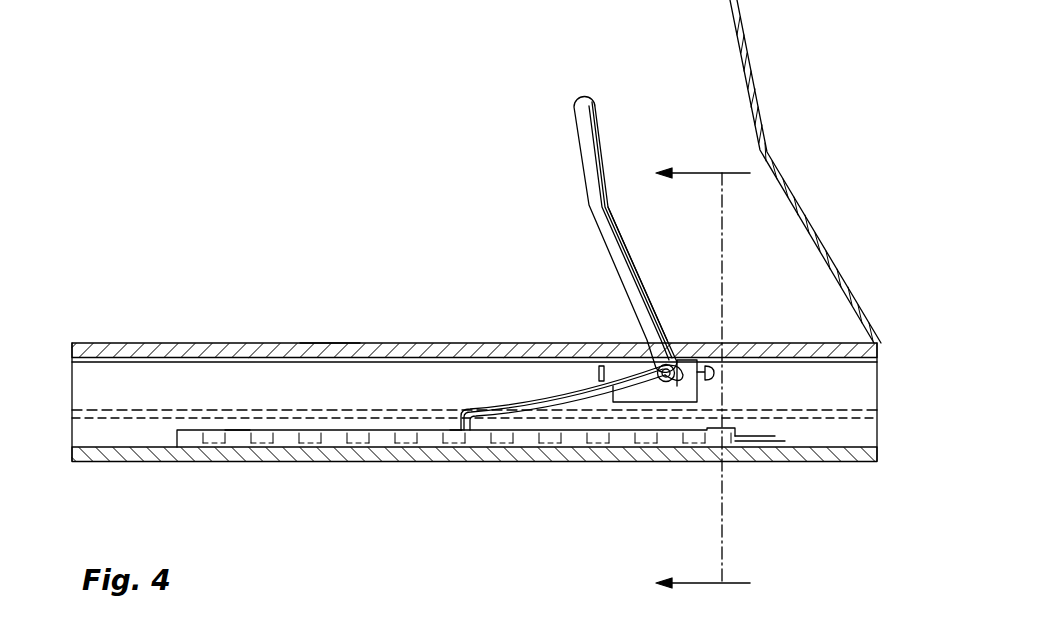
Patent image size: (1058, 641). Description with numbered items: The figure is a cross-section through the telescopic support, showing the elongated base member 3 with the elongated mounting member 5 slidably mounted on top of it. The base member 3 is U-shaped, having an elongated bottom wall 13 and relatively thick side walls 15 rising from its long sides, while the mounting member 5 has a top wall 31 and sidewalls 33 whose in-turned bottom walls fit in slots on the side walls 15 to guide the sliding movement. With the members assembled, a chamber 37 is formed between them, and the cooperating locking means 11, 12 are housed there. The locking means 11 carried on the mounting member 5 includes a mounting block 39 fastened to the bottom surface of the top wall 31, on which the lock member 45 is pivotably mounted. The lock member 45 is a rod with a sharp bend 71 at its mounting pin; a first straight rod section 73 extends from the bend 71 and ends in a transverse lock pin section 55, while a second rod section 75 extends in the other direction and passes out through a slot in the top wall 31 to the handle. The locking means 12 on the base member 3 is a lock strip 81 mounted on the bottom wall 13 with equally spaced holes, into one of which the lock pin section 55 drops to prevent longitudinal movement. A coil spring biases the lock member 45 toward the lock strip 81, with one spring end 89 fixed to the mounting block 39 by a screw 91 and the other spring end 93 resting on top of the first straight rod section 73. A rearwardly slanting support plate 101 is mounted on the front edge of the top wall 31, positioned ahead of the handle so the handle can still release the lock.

The base member 3 is at (381, 468).
The mounting member 5 is at (168, 334).
The locking means 11 is at (572, 175).
The locking means 12 is at (235, 424).
The bottom wall 13 is at (170, 463).
The side walls 15 is at (135, 392).
The top wall 31 is at (330, 344).
The sidewalls 33 is at (116, 360).
The chamber 37 is at (84, 429).
The mounting block 39 is at (680, 403).
The lock member 45 is at (660, 288).
The lock pin section 55 is at (440, 417).
The bend 71 is at (700, 403).
The first straight rod section 73 is at (501, 388).
The second rod section 75 is at (610, 247).
The lock strip 81 is at (326, 416).
The spring end 89 is at (703, 382).
The screw 91 is at (714, 370).
The spring end 93 is at (598, 366).
The support plate 101 is at (760, 108).